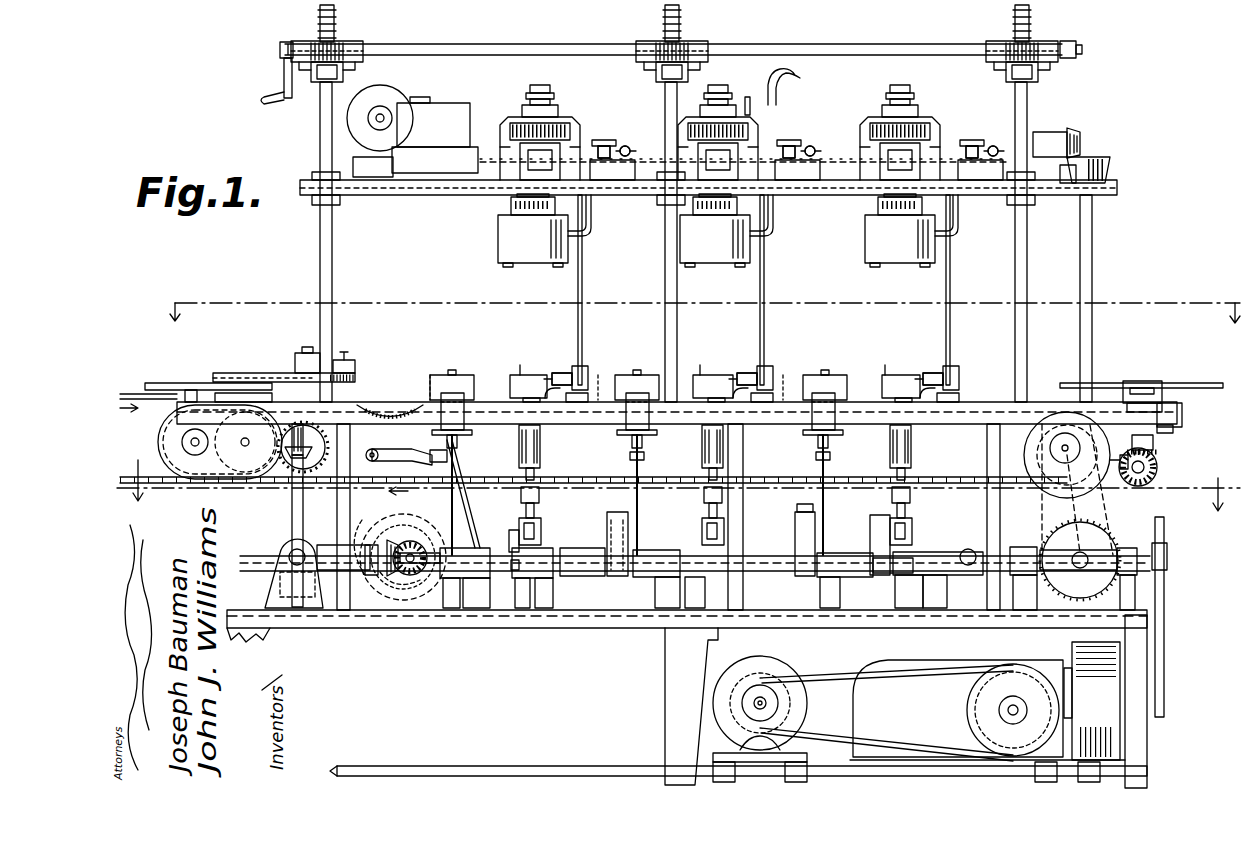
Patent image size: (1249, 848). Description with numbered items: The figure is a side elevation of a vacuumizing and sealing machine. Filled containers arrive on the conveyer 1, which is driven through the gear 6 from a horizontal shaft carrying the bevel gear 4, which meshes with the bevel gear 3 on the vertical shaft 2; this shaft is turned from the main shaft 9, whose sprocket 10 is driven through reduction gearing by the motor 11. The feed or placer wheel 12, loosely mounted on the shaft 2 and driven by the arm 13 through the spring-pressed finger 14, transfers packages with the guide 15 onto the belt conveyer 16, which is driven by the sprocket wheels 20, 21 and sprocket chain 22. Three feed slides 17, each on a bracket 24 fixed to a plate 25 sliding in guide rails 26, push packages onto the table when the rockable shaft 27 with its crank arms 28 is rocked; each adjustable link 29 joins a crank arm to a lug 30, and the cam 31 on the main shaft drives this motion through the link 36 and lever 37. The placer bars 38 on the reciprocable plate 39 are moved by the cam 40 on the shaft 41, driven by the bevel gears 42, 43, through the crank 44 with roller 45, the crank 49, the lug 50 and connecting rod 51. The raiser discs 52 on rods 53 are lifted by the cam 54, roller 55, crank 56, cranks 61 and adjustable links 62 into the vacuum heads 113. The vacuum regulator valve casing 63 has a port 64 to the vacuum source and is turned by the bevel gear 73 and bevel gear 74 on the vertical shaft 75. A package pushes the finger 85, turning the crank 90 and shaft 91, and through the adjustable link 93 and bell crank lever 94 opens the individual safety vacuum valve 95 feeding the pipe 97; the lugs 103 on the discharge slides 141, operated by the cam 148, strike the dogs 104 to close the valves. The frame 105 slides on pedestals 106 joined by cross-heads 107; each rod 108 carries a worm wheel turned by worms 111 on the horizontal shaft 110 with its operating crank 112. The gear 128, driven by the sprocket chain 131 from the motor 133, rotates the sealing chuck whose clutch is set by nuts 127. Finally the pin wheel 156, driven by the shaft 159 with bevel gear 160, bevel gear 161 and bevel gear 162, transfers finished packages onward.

The conveyer 1 is at (128, 393).
The vertical shaft 2 is at (292, 500).
The bevel gear 3 is at (246, 498).
The bevel gear 4 is at (313, 470).
The gear 6 is at (678, 476).
The main shaft 9 is at (406, 540).
The sprocket 10 is at (1164, 541).
The motor 11 is at (780, 665).
The feed or placer wheel 12 is at (240, 373).
The arm 13 is at (320, 353).
The spring-pressed finger 14 is at (350, 360).
The guide 15 is at (170, 383).
The belt conveyer 16 is at (160, 412).
The feed slides 17 is at (452, 375).
The sprocket wheel 20 is at (1102, 545).
The sprocket wheel 21 is at (1024, 462).
The sprocket chain 22 is at (1104, 522).
The bracket 24 is at (464, 425).
The plate 25 is at (648, 414).
The guide rails 26 is at (458, 441).
The rockable shaft 27 is at (584, 556).
The crank arms 28 is at (455, 515).
The adjustable link 29 is at (457, 458).
The lug 30 is at (430, 458).
The cam 31 is at (585, 548).
The link 36 is at (514, 530).
The lever 37 is at (511, 562).
The placer bars 38 is at (430, 400).
The reciprocable plate 39 is at (390, 403).
The cam 40 is at (372, 522).
The shaft 41 is at (410, 577).
The bevel gear 42 is at (362, 598).
The bevel gear 43 is at (425, 585).
The crank 44 is at (398, 580).
The roller 45 is at (403, 594).
The crank 49 is at (463, 505).
The lug 50 is at (398, 449).
The connecting rod 51 is at (372, 458).
The raiser discs 52 is at (510, 380).
The rods 53 is at (541, 458).
The cam 54 is at (878, 515).
The roller 55 is at (905, 628).
The crank 56 is at (905, 556).
The cranks 61 is at (542, 530).
The adjustable links 62 is at (540, 500).
The vacuum regulator valve casing 63 is at (746, 97).
The port 64 is at (789, 68).
The bevel gear 73 is at (1072, 128).
The bevel gear 74 is at (1096, 159).
The vertical shaft 75 is at (1092, 250).
The finger 85 is at (560, 373).
The crank 90 is at (584, 366).
The shaft 91 is at (582, 300).
The adjustable link 93 is at (604, 143).
The bell crank lever 94 is at (626, 144).
The individual safety vacuum valve 95 is at (612, 180).
The pipe 97 is at (594, 230).
The lugs 103 is at (558, 404).
The dogs 104 is at (577, 402).
The frame 105 is at (448, 195).
The pedestals 106 is at (320, 266).
The cross-heads 107 is at (343, 78).
The rod 108 is at (335, 28).
The horizontal shaft 110 is at (566, 44).
The worms 111 is at (355, 45).
The operating crank 112 is at (280, 80).
The vacuum heads 113 is at (498, 235).
The nuts 127 is at (547, 91).
The gear 128 is at (542, 116).
The sprocket chain 131 is at (641, 160).
The motor 133 is at (398, 93).
The discharge slides 141 is at (520, 375).
The cam 148 is at (797, 509).
The pin wheel 156 is at (1110, 383).
The shaft 159 is at (1150, 474).
The bevel gear 160 is at (1150, 430).
The bevel gear 161 is at (1158, 465).
The bevel gear 162 is at (1153, 446).